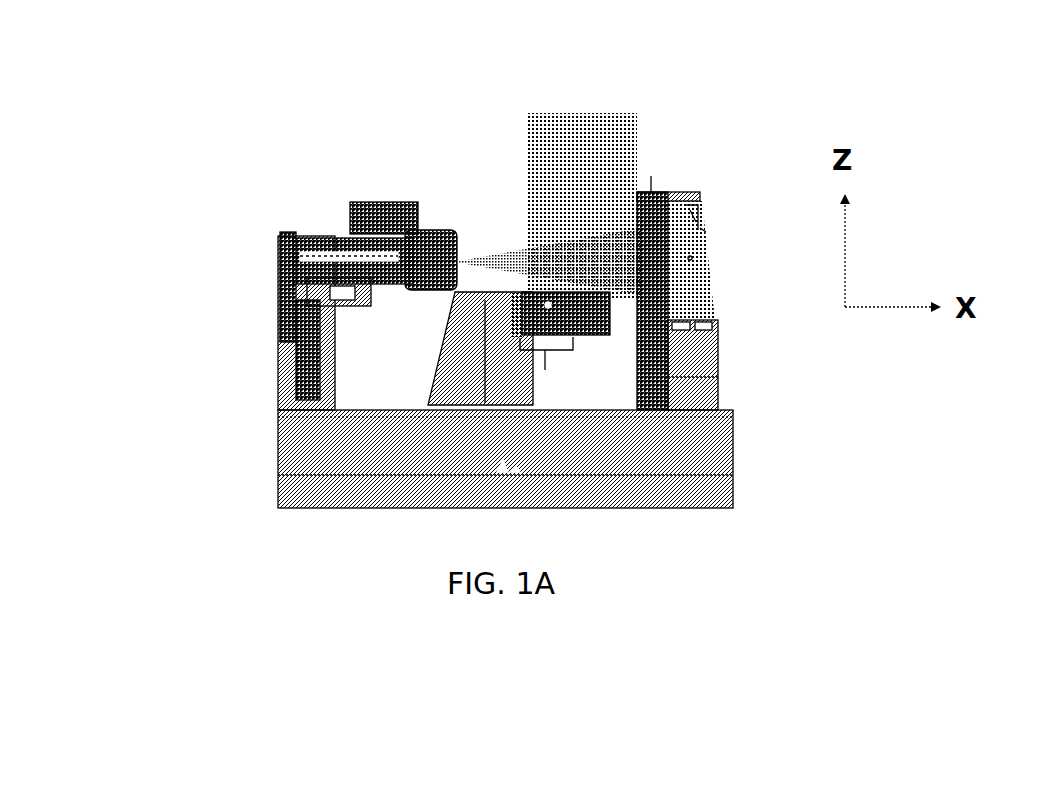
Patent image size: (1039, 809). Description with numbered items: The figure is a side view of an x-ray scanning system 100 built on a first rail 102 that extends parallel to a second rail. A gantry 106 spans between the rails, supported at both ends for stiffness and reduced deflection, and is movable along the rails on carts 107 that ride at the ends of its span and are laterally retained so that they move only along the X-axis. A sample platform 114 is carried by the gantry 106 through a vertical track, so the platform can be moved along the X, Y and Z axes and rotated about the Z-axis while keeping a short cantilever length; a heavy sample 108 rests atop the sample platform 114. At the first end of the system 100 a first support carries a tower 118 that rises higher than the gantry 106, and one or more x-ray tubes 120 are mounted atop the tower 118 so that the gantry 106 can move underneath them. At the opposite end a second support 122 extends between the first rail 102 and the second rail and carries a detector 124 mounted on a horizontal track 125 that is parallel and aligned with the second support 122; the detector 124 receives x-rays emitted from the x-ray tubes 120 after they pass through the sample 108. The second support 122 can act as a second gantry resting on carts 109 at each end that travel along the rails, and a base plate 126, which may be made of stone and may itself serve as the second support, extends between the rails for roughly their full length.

The x-ray scanning system 100 is at (322, 142).
The first rail 102 is at (320, 412).
The gantry 106 is at (430, 438).
The carts 107 is at (457, 350).
The sample 108 is at (620, 155).
The carts 109 is at (660, 397).
The sample platform 114 is at (603, 294).
The tower 118 is at (287, 327).
The x-ray tubes 120 is at (388, 140).
The second support 122 is at (713, 355).
The detector 124 is at (748, 229).
The horizontal track 125 is at (720, 325).
The base plate 126 is at (687, 500).